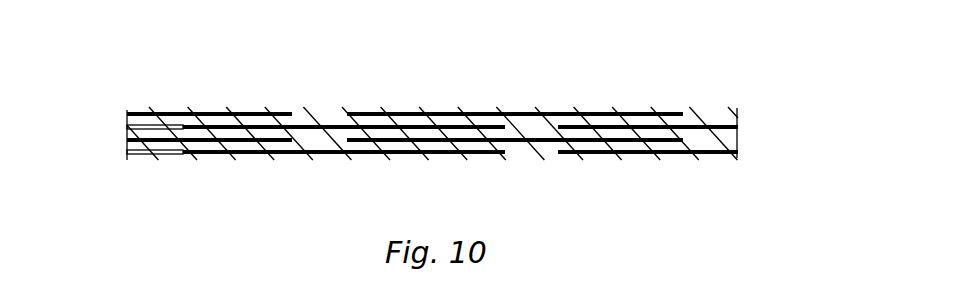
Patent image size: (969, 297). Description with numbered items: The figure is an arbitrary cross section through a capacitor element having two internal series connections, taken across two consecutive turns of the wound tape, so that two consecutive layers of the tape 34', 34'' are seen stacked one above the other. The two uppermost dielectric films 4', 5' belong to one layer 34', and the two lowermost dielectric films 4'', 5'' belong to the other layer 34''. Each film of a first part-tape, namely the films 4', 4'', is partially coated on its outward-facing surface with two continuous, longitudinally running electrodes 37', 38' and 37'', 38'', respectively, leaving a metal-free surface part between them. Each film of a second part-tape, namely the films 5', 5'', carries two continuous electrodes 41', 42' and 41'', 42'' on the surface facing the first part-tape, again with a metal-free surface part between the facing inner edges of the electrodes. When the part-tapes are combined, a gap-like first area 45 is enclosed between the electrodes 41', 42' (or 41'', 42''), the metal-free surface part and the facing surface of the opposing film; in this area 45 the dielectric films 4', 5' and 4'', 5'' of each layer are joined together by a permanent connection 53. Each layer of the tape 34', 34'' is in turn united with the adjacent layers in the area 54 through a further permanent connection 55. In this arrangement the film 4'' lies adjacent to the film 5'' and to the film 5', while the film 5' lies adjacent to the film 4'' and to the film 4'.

The layer of the tape 34' is at (108, 73).
The layer of the tape 34'' is at (195, 199).
The dielectric film 4' is at (379, 93).
The dielectric film 5' is at (405, 119).
The dielectric film 4'' is at (378, 158).
The dielectric film 5'' is at (405, 176).
The electrode 37' is at (209, 82).
The electrode 37'' is at (209, 176).
The electrode 41' is at (344, 72).
The electrode 41'' is at (344, 182).
The electrode 38' is at (515, 82).
The electrode 38'' is at (519, 176).
The electrode 42' is at (653, 88).
The electrode 42'' is at (665, 182).
The first area 45 is at (522, 130).
The permanent connection 53 is at (541, 130).
The area 54 is at (315, 122).
The permanent connection 55 is at (326, 122).